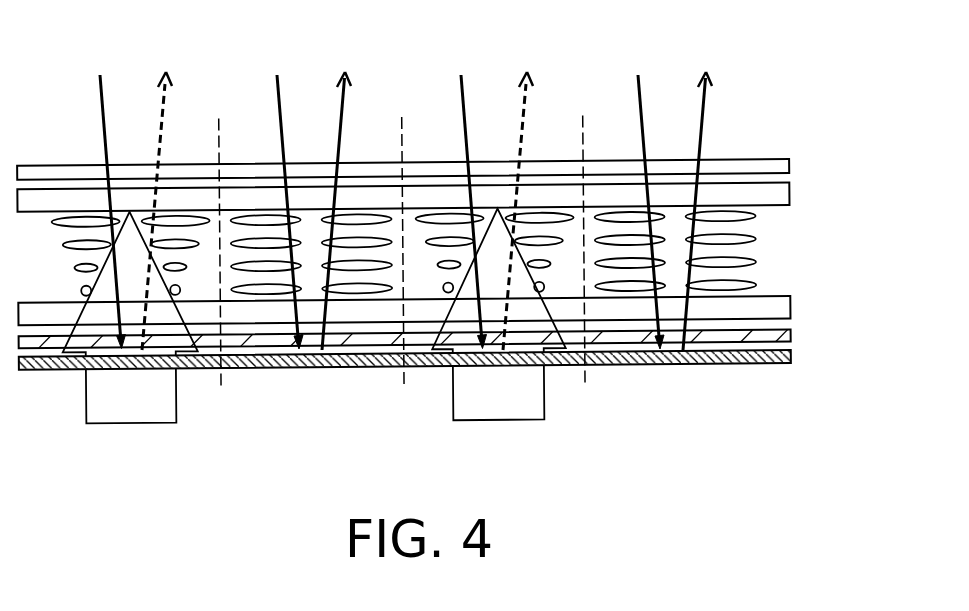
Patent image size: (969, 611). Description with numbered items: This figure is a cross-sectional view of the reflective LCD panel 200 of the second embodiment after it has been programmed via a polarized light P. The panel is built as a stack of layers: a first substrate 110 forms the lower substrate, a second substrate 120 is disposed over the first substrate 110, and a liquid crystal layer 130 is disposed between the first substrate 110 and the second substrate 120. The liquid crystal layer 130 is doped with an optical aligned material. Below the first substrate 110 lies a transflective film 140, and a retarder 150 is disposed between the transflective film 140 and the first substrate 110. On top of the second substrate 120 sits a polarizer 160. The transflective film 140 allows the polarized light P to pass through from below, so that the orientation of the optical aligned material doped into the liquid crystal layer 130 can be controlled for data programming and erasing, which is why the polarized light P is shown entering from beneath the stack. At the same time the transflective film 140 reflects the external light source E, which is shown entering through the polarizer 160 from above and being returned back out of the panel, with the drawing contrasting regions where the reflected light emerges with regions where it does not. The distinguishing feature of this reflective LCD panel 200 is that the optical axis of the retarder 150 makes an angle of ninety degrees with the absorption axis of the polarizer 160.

The reflective LCD panel 200 is at (760, 497).
The polarizer 160 is at (776, 164).
The second substrate 120 is at (780, 193).
The liquid crystal layer 130 is at (742, 238).
The first substrate 110 is at (775, 302).
The retarder 150 is at (775, 337).
The transflective film 140 is at (777, 358).
The polarized light P is at (162, 401).
The external light source E is at (102, 120).